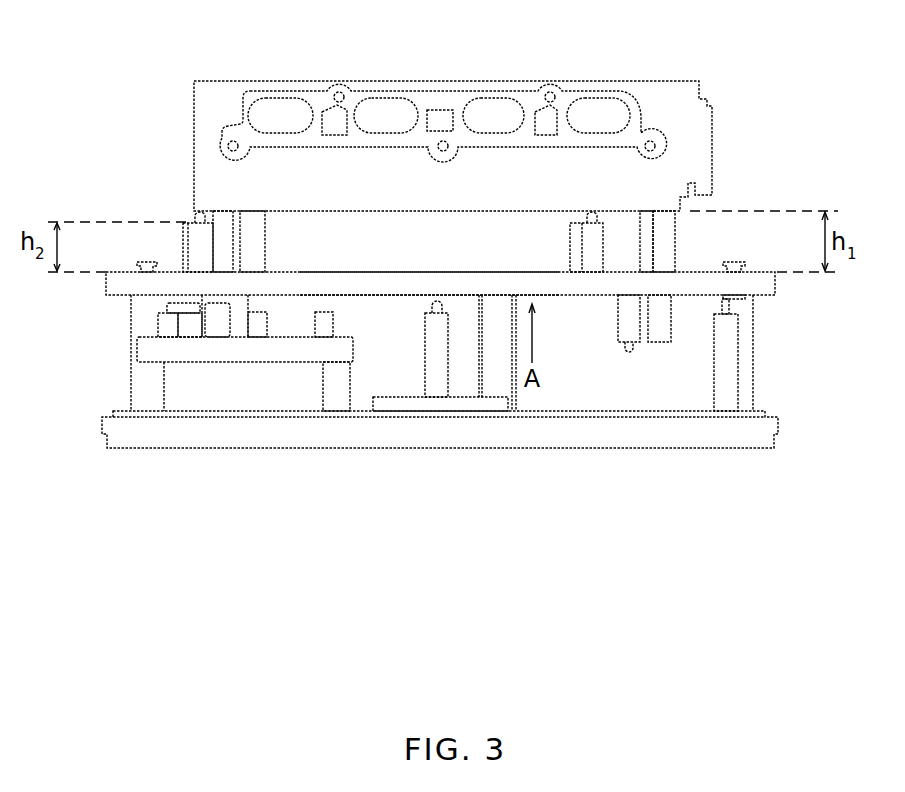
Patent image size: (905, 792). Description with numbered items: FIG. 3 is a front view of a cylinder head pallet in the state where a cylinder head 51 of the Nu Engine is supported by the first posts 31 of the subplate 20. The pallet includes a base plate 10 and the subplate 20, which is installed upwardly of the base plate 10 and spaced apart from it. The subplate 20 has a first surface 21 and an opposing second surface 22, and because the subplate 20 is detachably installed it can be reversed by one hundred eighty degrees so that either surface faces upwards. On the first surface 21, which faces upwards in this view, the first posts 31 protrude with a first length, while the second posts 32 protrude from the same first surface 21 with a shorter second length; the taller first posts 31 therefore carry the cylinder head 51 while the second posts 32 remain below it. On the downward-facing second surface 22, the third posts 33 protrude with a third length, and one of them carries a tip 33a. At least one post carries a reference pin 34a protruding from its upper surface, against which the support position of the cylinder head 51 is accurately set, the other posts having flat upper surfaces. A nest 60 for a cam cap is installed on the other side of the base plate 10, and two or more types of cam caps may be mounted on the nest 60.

The base plate 10 is at (773, 424).
The subplate 20 is at (115, 286).
The first surface 21 is at (424, 272).
The second surface 22 is at (386, 295).
The first post 31 is at (668, 252).
The second post 32 is at (570, 246).
The third post 33 is at (627, 318).
The pin tip 33a is at (628, 353).
The reference pin 34a is at (594, 211).
The cylinder head 51 is at (660, 92).
The nest for a cam cap 60 is at (147, 348).